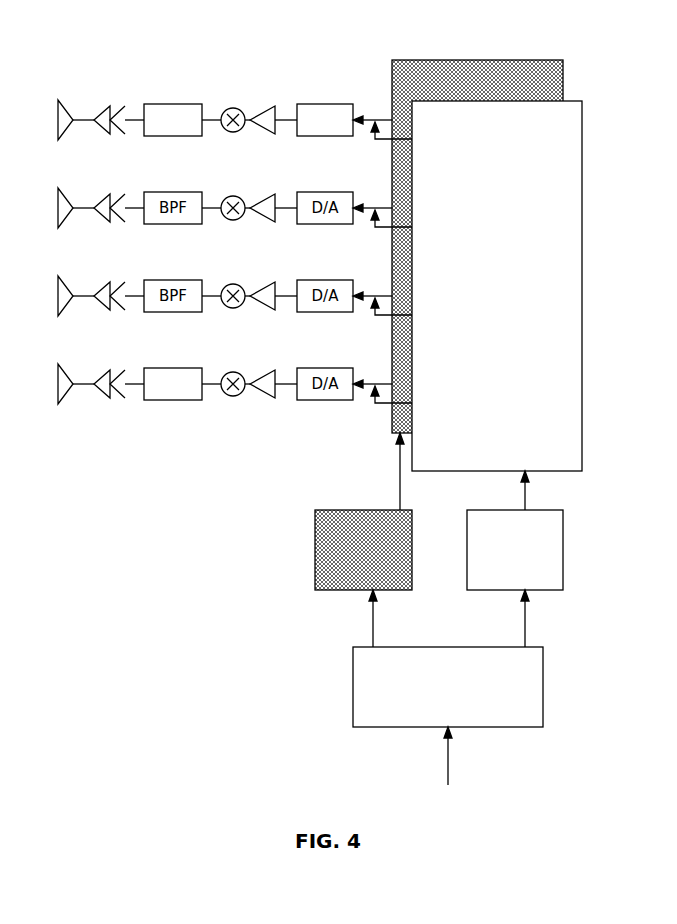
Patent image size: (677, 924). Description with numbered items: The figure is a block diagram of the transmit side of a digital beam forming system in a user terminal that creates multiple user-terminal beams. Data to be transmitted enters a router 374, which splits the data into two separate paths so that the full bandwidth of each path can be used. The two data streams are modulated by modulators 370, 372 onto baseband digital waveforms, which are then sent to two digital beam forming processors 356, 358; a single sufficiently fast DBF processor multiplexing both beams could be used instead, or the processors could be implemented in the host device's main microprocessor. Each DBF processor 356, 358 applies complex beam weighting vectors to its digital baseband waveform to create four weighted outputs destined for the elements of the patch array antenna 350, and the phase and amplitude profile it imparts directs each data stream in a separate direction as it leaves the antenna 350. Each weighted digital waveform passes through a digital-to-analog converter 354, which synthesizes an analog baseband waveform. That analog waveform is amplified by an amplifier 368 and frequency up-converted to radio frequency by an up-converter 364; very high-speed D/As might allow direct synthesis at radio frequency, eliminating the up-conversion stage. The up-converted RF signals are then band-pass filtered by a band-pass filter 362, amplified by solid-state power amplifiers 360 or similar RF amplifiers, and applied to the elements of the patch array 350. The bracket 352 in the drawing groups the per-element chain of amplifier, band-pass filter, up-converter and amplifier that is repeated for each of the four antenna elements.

The patch array antenna 350 is at (63, 100).
The transmit chain (amplifier, band pass filter, mixer, amplifier) 352 is at (287, 88).
The digital-to-analog converter 354 is at (334, 104).
The digital beam forming processor 356 is at (563, 88).
The digital beam forming processor 358 is at (582, 152).
The solid-state power amplifier 360 is at (108, 399).
The band-pass filter 362 is at (168, 401).
The frequency up-converter 364 is at (231, 397).
The amplifier 368 is at (270, 399).
The modulator 370 is at (315, 536).
The modulator 372 is at (467, 591).
The router 374 is at (353, 709).